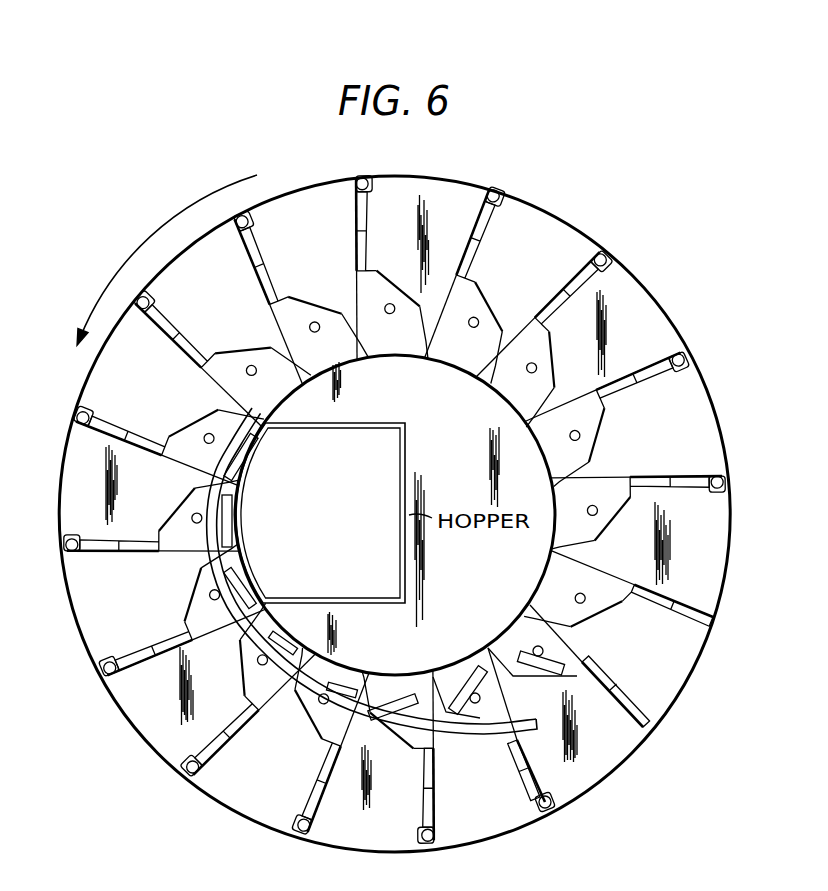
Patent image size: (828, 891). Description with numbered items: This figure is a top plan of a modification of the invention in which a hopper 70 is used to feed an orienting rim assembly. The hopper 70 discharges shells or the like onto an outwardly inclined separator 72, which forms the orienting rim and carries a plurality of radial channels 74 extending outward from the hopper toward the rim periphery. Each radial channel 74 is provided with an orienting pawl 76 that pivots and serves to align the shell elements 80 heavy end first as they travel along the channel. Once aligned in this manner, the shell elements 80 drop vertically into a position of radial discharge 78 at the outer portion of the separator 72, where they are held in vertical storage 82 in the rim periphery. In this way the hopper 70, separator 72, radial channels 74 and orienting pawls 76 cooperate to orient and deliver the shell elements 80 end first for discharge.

The hopper 70 is at (409, 453).
The separator 72 is at (513, 214).
The radial channel 74 is at (537, 343).
The orienting pawl 76 is at (537, 366).
The position of radial discharge 78 is at (605, 286).
The shell element 80 is at (588, 255).
The vertical storage 82 is at (602, 257).